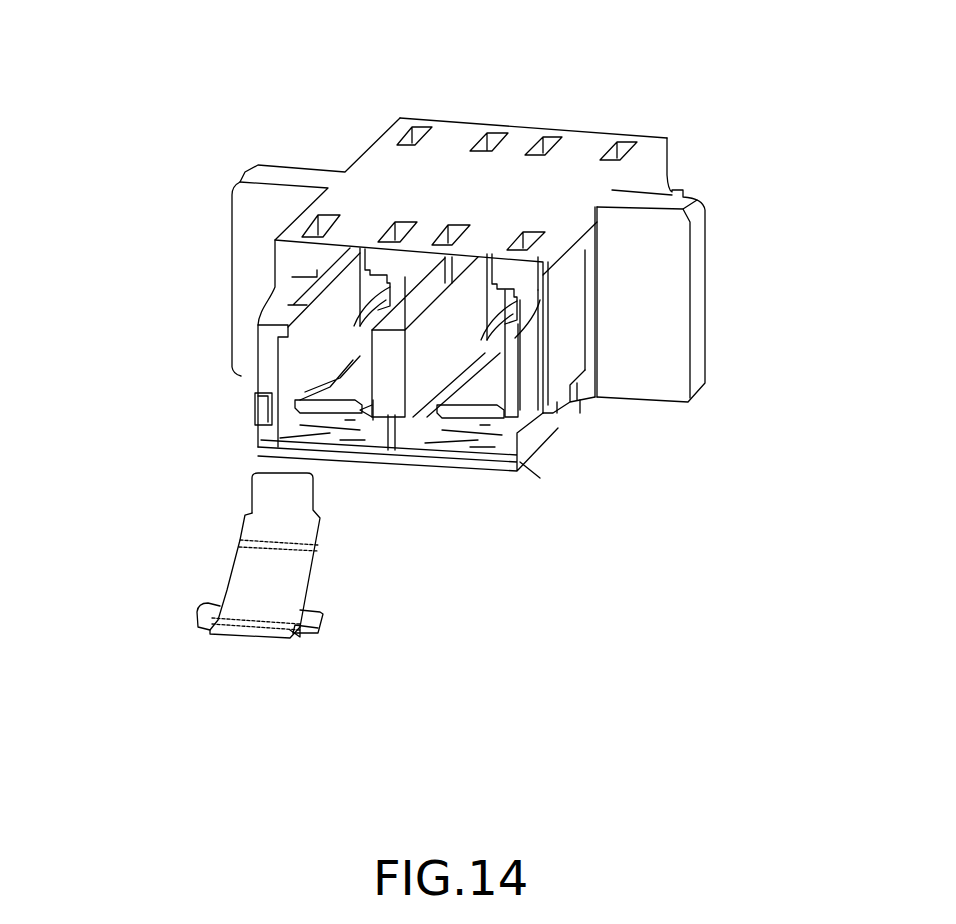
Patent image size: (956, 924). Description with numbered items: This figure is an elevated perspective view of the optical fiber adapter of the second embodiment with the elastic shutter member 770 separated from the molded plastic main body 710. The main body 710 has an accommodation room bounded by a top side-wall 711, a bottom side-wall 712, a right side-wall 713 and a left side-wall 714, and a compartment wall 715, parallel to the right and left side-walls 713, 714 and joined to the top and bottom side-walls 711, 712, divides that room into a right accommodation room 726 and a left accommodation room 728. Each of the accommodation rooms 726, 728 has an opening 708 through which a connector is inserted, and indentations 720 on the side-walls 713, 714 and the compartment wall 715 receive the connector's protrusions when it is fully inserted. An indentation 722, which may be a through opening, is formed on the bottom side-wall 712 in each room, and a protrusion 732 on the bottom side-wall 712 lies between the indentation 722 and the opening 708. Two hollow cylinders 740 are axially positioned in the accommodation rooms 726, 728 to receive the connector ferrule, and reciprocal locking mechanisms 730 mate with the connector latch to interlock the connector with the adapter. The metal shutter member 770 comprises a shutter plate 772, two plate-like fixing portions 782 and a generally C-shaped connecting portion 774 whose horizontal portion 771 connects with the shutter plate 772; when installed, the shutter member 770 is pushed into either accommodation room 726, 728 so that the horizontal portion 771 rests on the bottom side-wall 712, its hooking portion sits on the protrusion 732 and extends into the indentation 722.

The main body 710 is at (468, 244).
The top side-wall 711 is at (583, 153).
The bottom side-wall 712 is at (520, 477).
The right side-wall 713 is at (533, 427).
The left side-wall 714 is at (255, 440).
The compartment wall 715 is at (390, 370).
The indentations 720 is at (318, 415).
The indentation 722 is at (268, 443).
The opening 708 is at (353, 440).
The right accommodation room 726 is at (490, 398).
The left accommodation room 728 is at (320, 383).
The reciprocal locking mechanisms 730 is at (470, 270).
The protrusion 732 is at (348, 420).
The hollow cylinders 740 is at (385, 278).
The shutter member 770 is at (252, 587).
The horizontal portion 771 is at (300, 640).
The shutter plate 772 is at (280, 513).
The connecting portion 774 is at (320, 636).
The fixing portions 782 is at (205, 610).